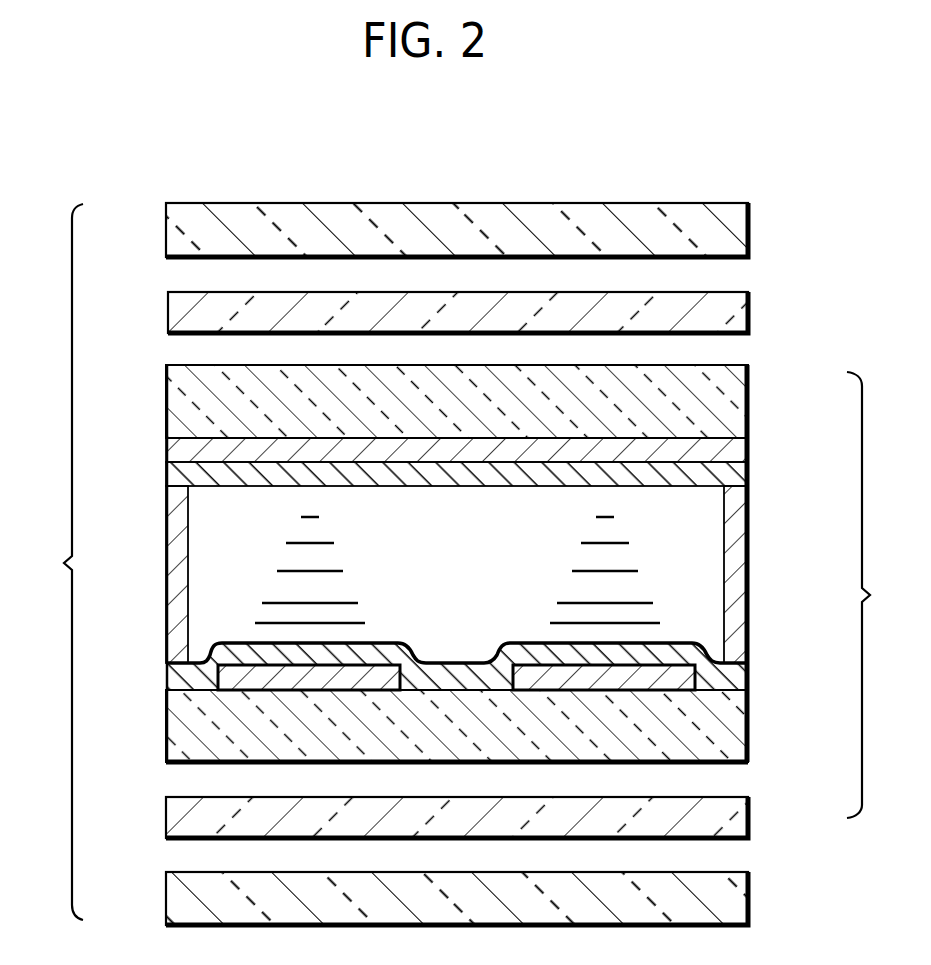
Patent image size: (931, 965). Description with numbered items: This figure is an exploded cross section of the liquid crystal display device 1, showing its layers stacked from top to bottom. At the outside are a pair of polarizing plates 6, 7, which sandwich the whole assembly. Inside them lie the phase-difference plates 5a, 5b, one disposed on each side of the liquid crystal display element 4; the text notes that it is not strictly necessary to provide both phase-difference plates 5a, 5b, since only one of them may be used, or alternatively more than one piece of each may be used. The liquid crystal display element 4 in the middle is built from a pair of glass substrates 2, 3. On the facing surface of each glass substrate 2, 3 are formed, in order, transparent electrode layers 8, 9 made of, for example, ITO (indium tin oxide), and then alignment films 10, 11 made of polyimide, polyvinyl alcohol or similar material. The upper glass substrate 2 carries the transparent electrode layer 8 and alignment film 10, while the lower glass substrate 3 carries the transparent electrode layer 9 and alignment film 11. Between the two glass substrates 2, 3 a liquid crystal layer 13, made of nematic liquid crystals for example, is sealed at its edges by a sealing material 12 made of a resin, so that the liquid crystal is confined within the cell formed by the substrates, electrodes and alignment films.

The liquid crystal display device 1 is at (59, 562).
The glass substrate 2 is at (738, 395).
The glass substrate 3 is at (735, 763).
The liquid crystal display element 4 is at (868, 595).
The phase-difference plate 5a is at (737, 311).
The phase-difference plate 5b is at (737, 825).
The polarizing plate 6 is at (747, 233).
The polarizing plate 7 is at (733, 903).
The transparent electrode layer 8 is at (737, 455).
The transparent electrode layer 9 is at (263, 682).
The alignment film 10 is at (737, 478).
The alignment film 11 is at (738, 683).
The sealing material 12 is at (167, 563).
The liquid crystal layer 13 is at (710, 600).